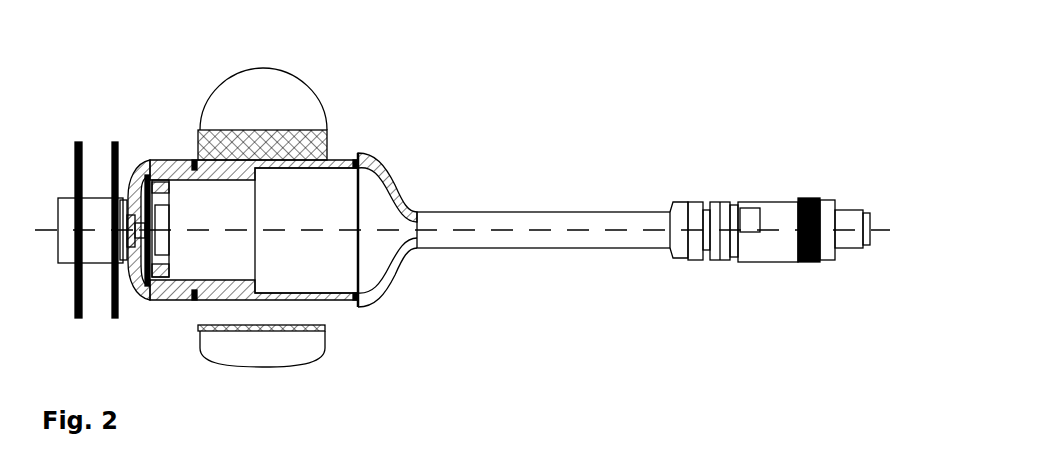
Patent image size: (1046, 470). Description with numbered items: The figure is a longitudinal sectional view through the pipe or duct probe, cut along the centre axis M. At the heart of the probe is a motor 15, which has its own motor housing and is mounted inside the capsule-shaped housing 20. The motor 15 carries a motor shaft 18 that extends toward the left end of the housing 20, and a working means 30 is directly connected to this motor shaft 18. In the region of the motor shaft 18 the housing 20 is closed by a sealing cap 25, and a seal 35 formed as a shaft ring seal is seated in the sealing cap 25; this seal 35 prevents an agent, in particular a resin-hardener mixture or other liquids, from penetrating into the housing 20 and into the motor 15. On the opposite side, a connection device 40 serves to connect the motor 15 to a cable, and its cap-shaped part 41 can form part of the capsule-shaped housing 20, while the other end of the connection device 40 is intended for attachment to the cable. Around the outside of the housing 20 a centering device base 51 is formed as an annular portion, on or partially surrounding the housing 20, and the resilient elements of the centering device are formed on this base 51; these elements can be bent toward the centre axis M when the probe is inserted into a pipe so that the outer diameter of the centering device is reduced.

The working means 30 is at (84, 322).
The motor shaft 18 is at (127, 196).
The seal 35 is at (140, 288).
The sealing cap 25 is at (167, 162).
The housing 20 is at (348, 305).
The motor 15 is at (342, 185).
The centering device base 51 is at (318, 137).
The cap-shaped part 41 is at (387, 187).
The centre axis M is at (497, 228).
The connection device 40 is at (623, 186).